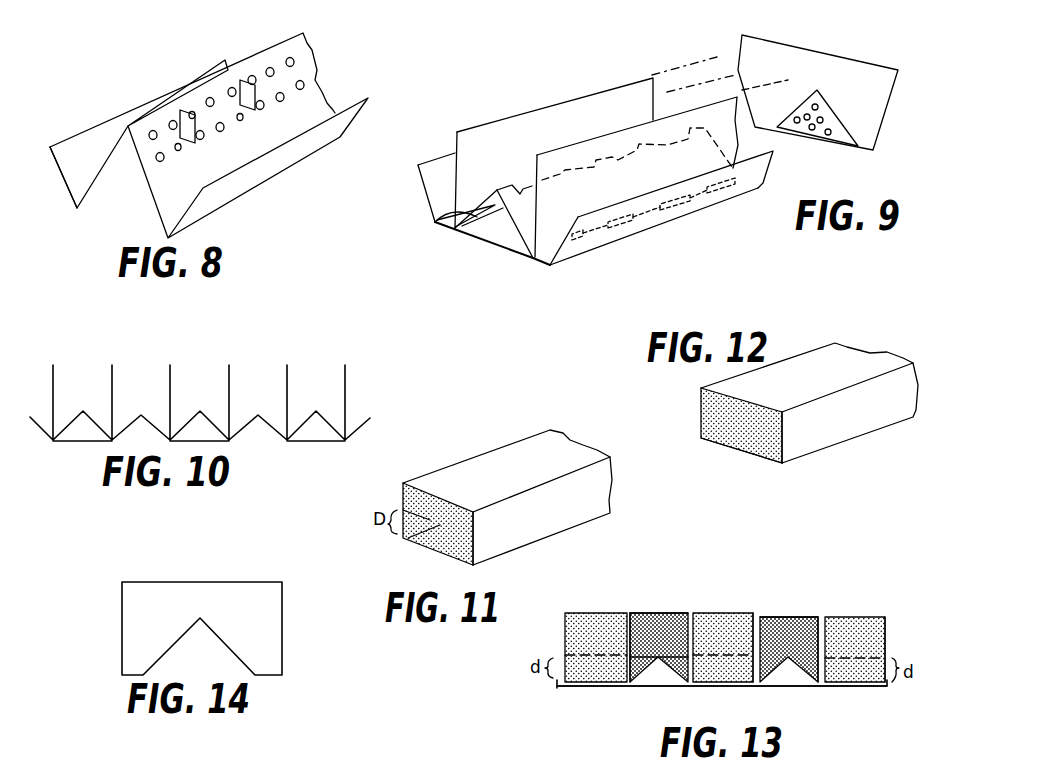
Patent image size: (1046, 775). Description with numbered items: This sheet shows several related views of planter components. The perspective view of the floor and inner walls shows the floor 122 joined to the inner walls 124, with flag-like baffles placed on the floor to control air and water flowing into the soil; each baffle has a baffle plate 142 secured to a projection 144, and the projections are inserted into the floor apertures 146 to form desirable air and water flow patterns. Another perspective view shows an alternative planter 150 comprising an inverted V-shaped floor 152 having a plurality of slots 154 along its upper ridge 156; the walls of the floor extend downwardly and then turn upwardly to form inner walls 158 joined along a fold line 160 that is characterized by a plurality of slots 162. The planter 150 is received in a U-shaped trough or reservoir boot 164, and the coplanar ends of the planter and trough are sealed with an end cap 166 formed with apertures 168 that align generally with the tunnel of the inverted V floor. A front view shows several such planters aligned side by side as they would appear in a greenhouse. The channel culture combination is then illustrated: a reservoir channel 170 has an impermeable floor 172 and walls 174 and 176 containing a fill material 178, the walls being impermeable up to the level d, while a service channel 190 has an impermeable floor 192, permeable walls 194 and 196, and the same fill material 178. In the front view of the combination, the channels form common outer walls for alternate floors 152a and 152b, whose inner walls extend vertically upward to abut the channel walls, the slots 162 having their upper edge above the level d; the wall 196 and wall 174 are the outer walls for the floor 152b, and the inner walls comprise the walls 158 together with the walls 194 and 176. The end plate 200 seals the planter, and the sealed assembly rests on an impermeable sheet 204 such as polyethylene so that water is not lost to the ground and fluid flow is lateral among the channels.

In FIG. 8, the floor 122 is at (97, 170).
In FIG. 8, the inner walls 124 is at (58, 170).
In FIG. 8, the baffle plate 142 is at (243, 77).
In FIG. 8, the projection 144 is at (178, 147).
In FIG. 8, the floor apertures 146 is at (230, 90).
In FIG. 9, the planter 150 is at (452, 257).
In FIG. 9, the inverted V-shaped floor 152 is at (442, 213).
In FIG. 13, the floor 152a is at (672, 607).
In FIG. 13, the floor 152b is at (797, 617).
In FIG. 9, the slots 154 is at (528, 185).
In FIG. 9, the upper ridge 156 is at (513, 187).
In FIG. 9, the inner walls 158 is at (457, 143).
In FIG. 13, the inner walls 158 is at (630, 620).
In FIG. 9, the fold line 160 is at (535, 258).
In FIG. 9, the slots 162 is at (485, 220).
In FIG. 9, the reservoir boot 164 is at (732, 203).
In FIG. 9, the end cap 166 is at (842, 68).
In FIG. 9, the apertures 168 is at (820, 135).
In FIG. 9, the reservoir channel 170 is at (492, 203).
In FIG. 11, the reservoir channel 170 is at (398, 493).
In FIG. 13, the reservoir channel 170 is at (592, 613).
In FIG. 11, the impermeable floor 172 is at (438, 552).
In FIG. 11, the wall 174 is at (402, 487).
In FIG. 13, the wall 174 is at (682, 623).
In FIG. 11, the wall 176 is at (473, 547).
In FIG. 13, the wall 176 is at (772, 617).
In FIG. 11, the fill material 178 is at (520, 448).
In FIG. 12, the fill material 178 is at (797, 355).
In FIG. 12, the service channel 190 is at (717, 452).
In FIG. 12, the impermeable floor 192 is at (760, 462).
In FIG. 13, the impermeable floor 192 is at (630, 660).
In FIG. 12, the permeable wall 194 is at (701, 418).
In FIG. 13, the permeable wall 194 is at (565, 640).
In FIG. 12, the permeable wall 196 is at (783, 438).
In FIG. 13, the permeable wall 196 is at (887, 638).
In FIG. 14, the end plate 200 is at (172, 587).
In FIG. 13, the impermeable sheet 204 is at (862, 688).